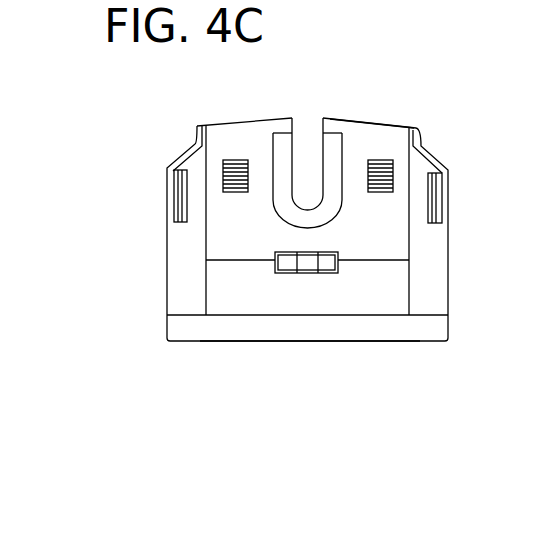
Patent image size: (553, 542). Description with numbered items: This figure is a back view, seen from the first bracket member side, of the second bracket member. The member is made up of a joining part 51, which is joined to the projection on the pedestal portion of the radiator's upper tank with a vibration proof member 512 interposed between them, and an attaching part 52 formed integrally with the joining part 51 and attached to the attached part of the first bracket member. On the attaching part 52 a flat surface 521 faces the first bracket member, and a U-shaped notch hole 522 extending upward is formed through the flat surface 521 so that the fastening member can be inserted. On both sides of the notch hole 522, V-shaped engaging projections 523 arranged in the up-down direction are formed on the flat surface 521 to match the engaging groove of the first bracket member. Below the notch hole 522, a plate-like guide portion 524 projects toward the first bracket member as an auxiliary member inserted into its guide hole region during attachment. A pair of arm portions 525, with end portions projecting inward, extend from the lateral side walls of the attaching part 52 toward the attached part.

The joining part 51 is at (165, 326).
The attaching part 52 is at (181, 142).
The vibration proof member 512 is at (340, 332).
The flat surface 521 is at (357, 137).
The notch hole 522 is at (291, 152).
The engaging projections 523 is at (226, 159).
The guide portion 524 is at (320, 252).
The arm portions 525 is at (173, 195).